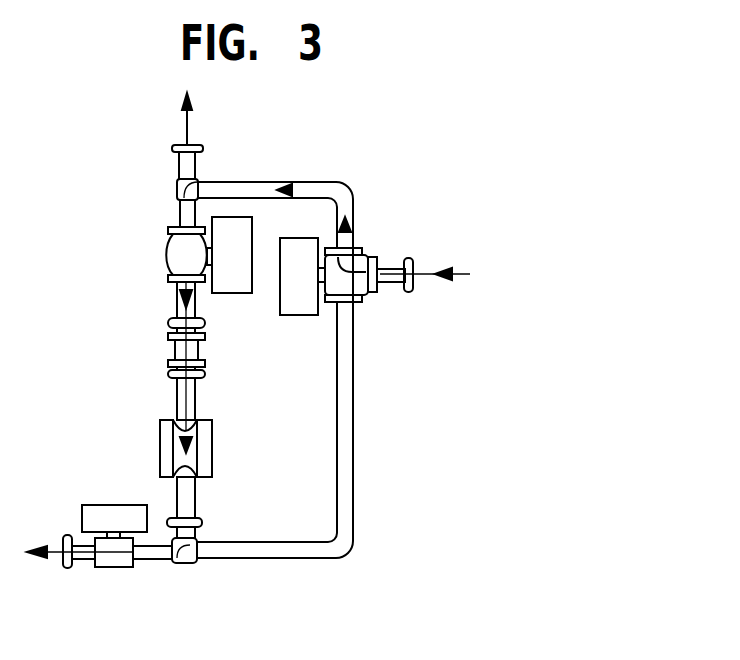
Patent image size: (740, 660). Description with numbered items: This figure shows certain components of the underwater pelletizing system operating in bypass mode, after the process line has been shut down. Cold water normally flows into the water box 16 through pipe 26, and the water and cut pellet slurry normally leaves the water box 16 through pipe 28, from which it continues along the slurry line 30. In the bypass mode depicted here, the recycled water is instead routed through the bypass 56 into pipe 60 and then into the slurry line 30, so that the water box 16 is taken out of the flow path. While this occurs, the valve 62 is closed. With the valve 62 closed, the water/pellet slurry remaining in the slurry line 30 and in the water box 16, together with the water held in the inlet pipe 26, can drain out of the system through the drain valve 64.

The water box 16 is at (163, 440).
The pipe 26 is at (190, 493).
The pipe 28 is at (190, 400).
The slurry line 30 is at (188, 130).
The bypass 56 is at (352, 283).
The pipe 60 is at (313, 182).
The valve 62 is at (178, 255).
The drain valve 64 is at (117, 555).